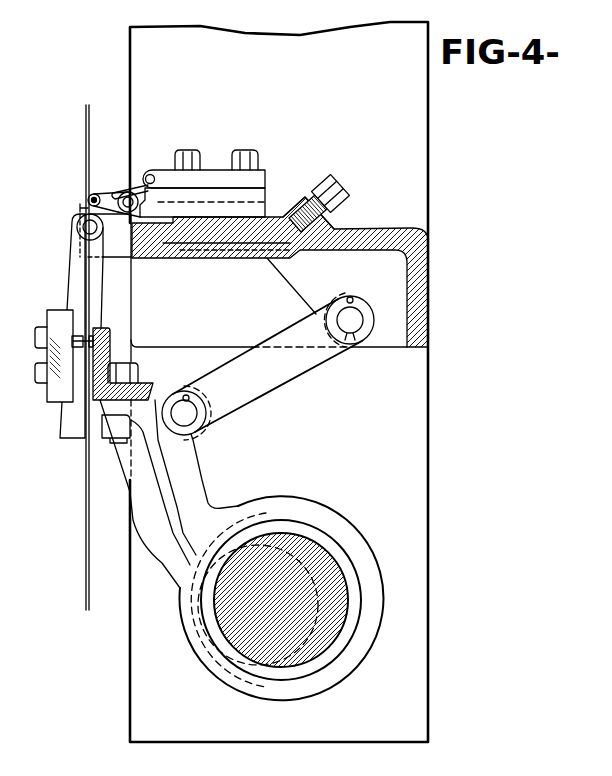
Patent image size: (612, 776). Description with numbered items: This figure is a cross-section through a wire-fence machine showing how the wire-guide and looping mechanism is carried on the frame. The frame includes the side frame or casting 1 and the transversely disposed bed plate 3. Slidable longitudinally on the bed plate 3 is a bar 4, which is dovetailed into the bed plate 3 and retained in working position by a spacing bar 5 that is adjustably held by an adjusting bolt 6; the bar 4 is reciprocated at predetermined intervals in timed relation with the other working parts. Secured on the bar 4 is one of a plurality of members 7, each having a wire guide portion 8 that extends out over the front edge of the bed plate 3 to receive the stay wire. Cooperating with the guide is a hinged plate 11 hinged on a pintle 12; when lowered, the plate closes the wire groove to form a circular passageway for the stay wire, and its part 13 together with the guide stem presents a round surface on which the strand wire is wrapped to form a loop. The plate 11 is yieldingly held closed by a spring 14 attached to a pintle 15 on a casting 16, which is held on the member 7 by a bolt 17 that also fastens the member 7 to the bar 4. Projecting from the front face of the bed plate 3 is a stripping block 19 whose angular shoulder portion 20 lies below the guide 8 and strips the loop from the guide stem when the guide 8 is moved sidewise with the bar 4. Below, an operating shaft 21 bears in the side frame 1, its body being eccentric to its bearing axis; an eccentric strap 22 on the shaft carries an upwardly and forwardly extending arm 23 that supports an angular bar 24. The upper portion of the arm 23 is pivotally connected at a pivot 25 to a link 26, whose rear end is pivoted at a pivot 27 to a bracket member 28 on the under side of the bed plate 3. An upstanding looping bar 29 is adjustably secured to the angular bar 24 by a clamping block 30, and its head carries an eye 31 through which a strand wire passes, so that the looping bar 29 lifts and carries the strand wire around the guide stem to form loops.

The side frame or casting 1 is at (279, 382).
The bed plate 3 is at (210, 258).
The bar 4 is at (178, 258).
The spacing bar 5 is at (285, 215).
The adjusting bolt 6 is at (340, 195).
The member 7 is at (253, 197).
The wire guide portion 8 is at (110, 217).
The hinged plate 11 is at (98, 196).
The pintle 12 is at (138, 205).
The plate part 13 is at (93, 197).
The spring 14 is at (132, 187).
The pintle 15 is at (157, 178).
The casting 16 is at (207, 177).
The bolt 17 is at (243, 157).
The stripping block 19 is at (118, 257).
The angular shoulder portion 20 is at (80, 209).
The operating shaft 21 is at (333, 557).
The eccentric strap 22 is at (367, 572).
The arm 23 is at (197, 487).
The angular bar 24 is at (147, 380).
The pivot 25 is at (187, 410).
The link 26 is at (267, 365).
The pivot 27 is at (352, 320).
The bracket member 28 is at (350, 307).
The looping bar 29 is at (78, 283).
The clamping block 30 is at (57, 378).
The eye 31 is at (80, 232).